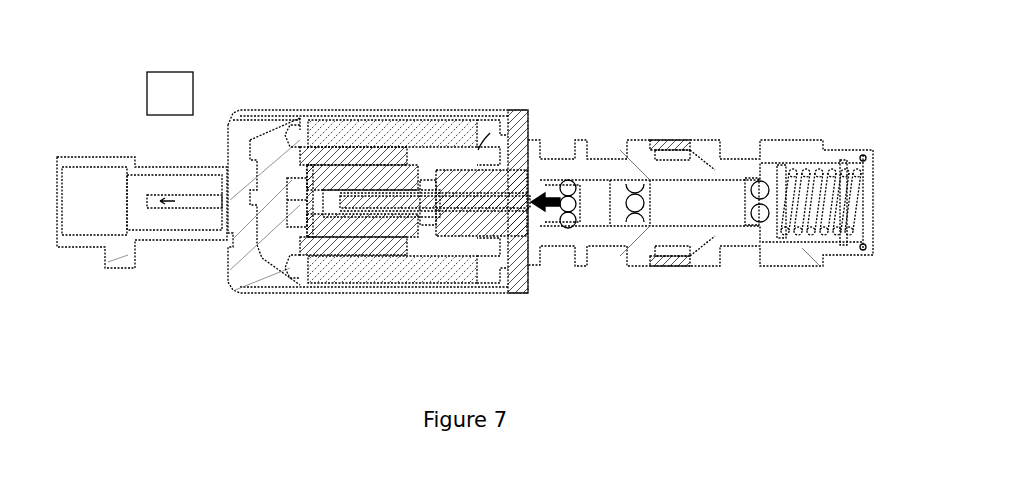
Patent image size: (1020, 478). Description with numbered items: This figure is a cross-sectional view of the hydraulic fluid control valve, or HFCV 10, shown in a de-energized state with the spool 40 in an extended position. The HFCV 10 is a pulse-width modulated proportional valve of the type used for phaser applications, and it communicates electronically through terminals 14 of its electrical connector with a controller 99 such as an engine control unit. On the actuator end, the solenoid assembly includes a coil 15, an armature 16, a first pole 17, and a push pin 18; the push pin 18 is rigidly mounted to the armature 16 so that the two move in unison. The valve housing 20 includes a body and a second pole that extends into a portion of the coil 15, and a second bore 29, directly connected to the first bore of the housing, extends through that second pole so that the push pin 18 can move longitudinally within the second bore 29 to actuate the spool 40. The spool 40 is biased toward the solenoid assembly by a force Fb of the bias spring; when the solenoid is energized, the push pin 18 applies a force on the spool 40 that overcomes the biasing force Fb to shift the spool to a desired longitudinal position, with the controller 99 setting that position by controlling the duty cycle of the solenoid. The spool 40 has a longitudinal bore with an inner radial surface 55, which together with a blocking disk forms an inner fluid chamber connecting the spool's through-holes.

The HFCV 10 is at (768, 110).
The terminals 14 is at (178, 205).
The coil 15 is at (413, 137).
The armature 16 is at (377, 177).
The first pole 17 is at (330, 155).
The push pin 18 is at (425, 205).
The valve housing 20 is at (710, 148).
The second bore 29 is at (488, 188).
The spool 40 is at (603, 172).
The inner radial surface 55 is at (722, 187).
The controller 99 is at (185, 203).
The biasing force Fb is at (548, 212).